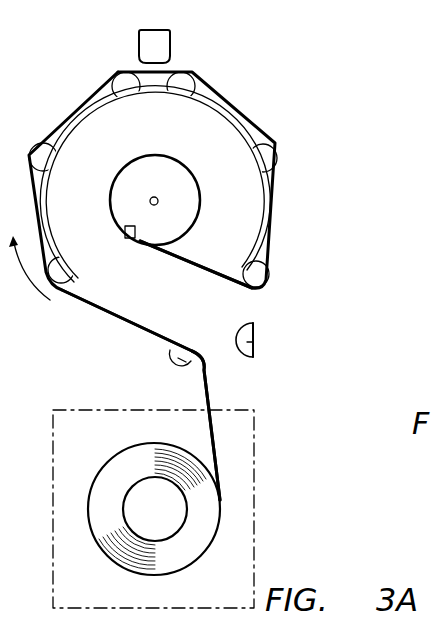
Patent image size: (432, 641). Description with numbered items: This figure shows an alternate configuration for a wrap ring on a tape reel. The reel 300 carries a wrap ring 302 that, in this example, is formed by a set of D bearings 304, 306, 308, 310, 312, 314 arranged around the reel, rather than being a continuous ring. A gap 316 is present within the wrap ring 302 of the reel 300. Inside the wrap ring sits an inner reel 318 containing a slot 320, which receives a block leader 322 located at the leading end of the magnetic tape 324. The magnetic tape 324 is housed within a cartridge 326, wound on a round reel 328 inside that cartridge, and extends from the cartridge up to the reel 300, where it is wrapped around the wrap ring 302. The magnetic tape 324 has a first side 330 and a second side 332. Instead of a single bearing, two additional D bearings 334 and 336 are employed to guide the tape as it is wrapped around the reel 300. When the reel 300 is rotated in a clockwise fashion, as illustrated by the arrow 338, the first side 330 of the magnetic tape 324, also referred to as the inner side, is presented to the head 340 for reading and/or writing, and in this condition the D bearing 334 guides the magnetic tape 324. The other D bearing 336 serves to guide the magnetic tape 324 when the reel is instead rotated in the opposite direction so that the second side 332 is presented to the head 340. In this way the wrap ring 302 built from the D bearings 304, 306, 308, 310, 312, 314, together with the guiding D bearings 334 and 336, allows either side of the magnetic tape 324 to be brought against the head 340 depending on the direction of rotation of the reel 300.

The reel 300 is at (258, 90).
The wrap ring 302 is at (86, 113).
The D bearing 304 is at (184, 78).
The D bearing 306 is at (270, 150).
The D bearing 308 is at (264, 283).
The D bearing 310 is at (66, 270).
The D bearing 312 is at (42, 145).
The D bearing 314 is at (118, 72).
The gap 316 is at (93, 301).
The inner reel 318 is at (163, 159).
The slot 320 is at (124, 230).
The block leader 322 is at (200, 265).
The magnetic tape 324 is at (112, 462).
The cartridge 326 is at (183, 347).
The round reel 328 is at (196, 552).
The first side 330 is at (141, 324).
The second side 332 is at (93, 300).
The D bearing 334 is at (176, 365).
The D bearing 336 is at (254, 341).
The arrow 338 is at (47, 302).
The head 340 is at (139, 46).